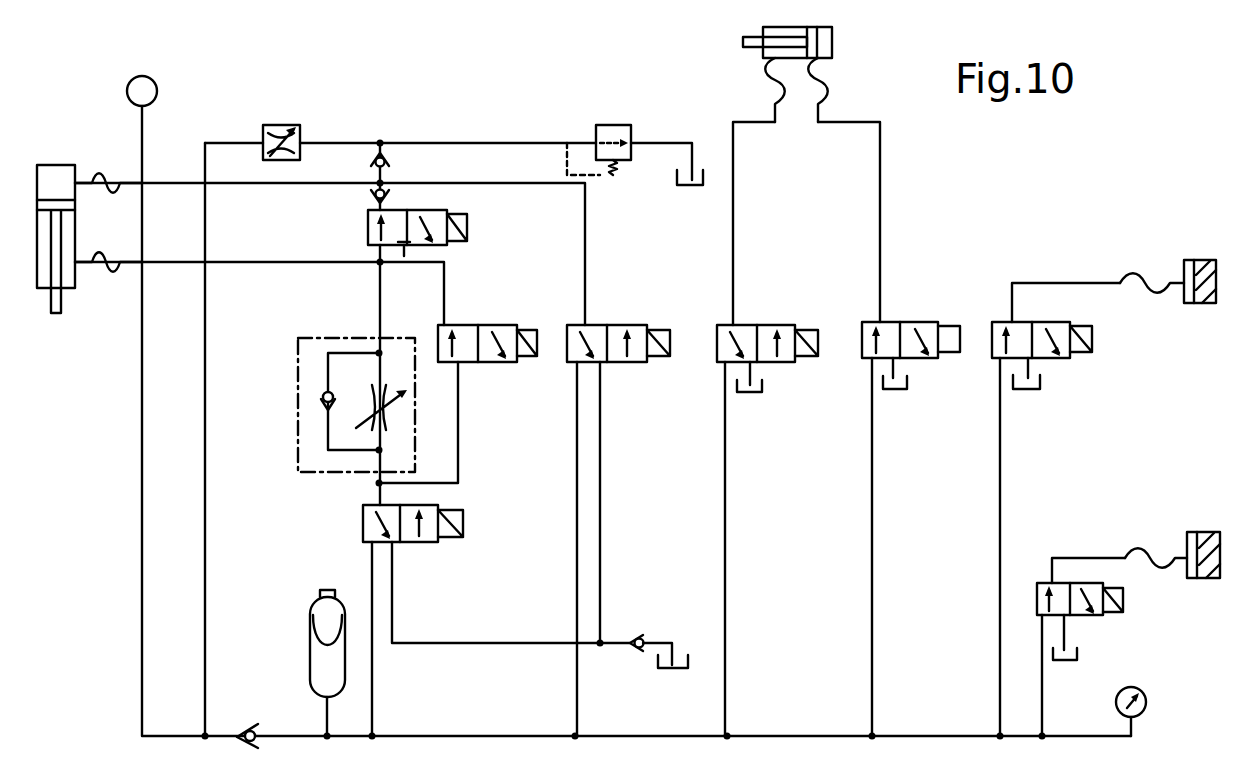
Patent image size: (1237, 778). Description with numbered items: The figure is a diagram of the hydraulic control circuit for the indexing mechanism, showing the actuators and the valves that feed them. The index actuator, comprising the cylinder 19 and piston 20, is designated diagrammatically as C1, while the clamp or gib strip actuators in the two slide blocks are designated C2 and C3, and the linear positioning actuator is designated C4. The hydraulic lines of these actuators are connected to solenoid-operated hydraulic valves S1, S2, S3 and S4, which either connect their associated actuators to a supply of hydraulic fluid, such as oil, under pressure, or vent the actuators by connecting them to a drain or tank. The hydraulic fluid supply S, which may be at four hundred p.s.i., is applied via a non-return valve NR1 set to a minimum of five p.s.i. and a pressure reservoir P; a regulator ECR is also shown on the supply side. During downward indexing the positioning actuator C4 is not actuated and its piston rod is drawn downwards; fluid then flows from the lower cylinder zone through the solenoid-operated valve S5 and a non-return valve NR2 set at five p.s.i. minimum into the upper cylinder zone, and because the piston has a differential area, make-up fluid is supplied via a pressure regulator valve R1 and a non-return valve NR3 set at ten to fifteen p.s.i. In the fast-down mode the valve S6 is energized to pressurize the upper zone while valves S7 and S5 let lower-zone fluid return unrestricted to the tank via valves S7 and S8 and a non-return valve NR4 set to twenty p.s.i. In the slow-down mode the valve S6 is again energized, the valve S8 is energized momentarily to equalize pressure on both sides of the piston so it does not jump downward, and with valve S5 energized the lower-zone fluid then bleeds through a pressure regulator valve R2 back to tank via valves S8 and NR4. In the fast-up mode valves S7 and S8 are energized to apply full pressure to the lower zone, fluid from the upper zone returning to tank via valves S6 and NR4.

The hydraulic fluid supply S is at (142, 91).
The linear positioning actuator C4 is at (89, 227).
The pressure regulator valve R1 is at (281, 130).
The non-return valve NR3 is at (404, 163).
The non-return valve NR2 is at (404, 200).
The solenoid-operated hydraulic valve S5 is at (433, 233).
The pressure regulator ECR is at (600, 137).
The cylinder 19 is at (770, 28).
The piston 20 is at (815, 32).
The index actuator C1 is at (801, 69).
The solenoid-operated hydraulic valve S7 is at (458, 404).
The solenoid-operated hydraulic valve S6 is at (618, 530).
The solenoid-operated hydraulic valve S4 is at (767, 429).
The solenoid-operated hydraulic valve S3 is at (889, 429).
The solenoid-operated hydraulic valve S1 is at (1056, 509).
The clamp actuator C2 is at (1168, 297).
The pressure regulator valve R2 is at (356, 405).
The solenoid-operated hydraulic valve S8 is at (496, 620).
The pressure reservoir P is at (316, 663).
The non-return valve NR1 is at (247, 724).
The non-return valve NR4 is at (659, 638).
The solenoid-operated hydraulic valve S2 is at (1081, 647).
The clamp actuator C3 is at (1172, 570).